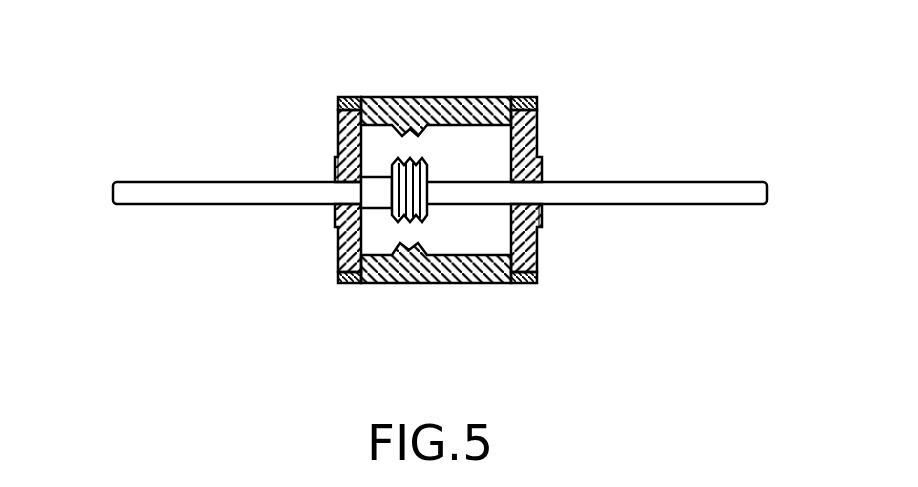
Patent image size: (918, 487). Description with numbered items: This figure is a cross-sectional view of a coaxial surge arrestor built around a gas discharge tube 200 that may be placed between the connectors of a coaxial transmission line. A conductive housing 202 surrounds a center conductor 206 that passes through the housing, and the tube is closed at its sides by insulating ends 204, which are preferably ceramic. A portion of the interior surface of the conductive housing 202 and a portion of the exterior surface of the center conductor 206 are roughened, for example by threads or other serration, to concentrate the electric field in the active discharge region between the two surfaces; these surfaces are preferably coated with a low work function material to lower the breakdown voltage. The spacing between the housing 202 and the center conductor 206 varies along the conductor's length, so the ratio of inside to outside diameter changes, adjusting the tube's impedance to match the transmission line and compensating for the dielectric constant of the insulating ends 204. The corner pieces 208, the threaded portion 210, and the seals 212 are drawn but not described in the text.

The gas discharge tube 200 is at (548, 86).
The conductive housing 202 is at (392, 102).
The insulating ends 204 is at (537, 137).
The center conductor 206 is at (135, 182).
The corner cap 208 is at (338, 102).
The threaded hub 210 is at (542, 180).
The seal 212 is at (335, 172).